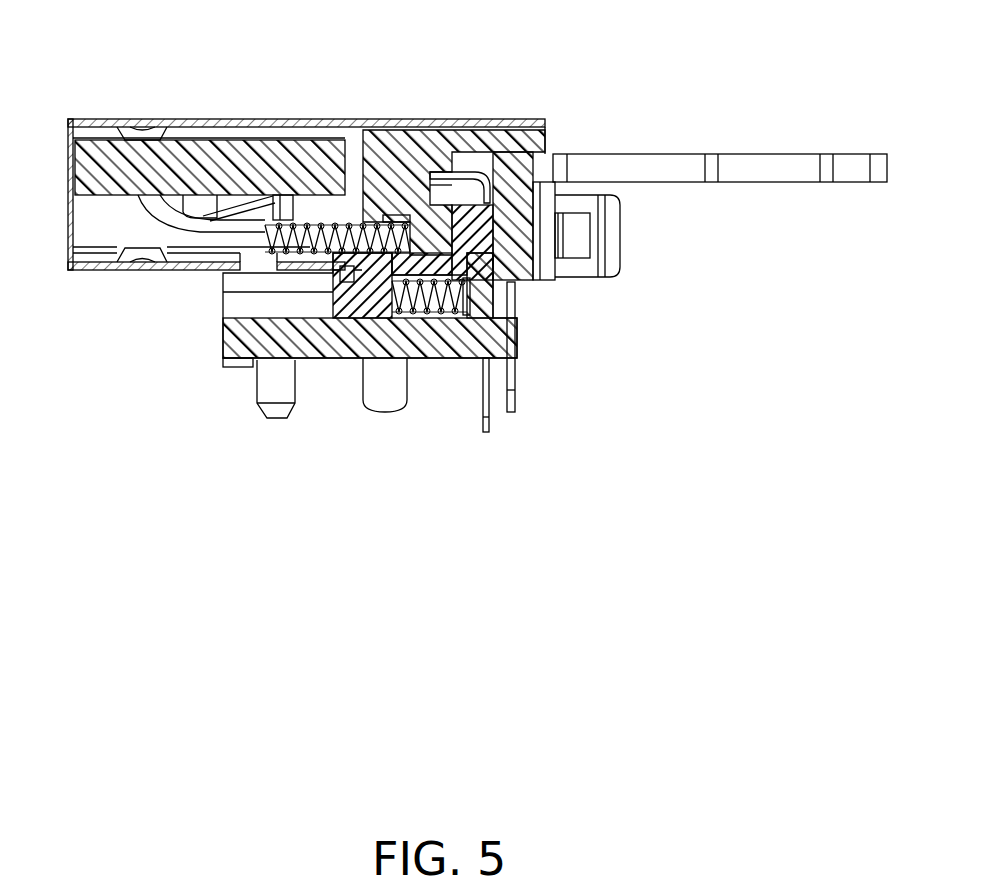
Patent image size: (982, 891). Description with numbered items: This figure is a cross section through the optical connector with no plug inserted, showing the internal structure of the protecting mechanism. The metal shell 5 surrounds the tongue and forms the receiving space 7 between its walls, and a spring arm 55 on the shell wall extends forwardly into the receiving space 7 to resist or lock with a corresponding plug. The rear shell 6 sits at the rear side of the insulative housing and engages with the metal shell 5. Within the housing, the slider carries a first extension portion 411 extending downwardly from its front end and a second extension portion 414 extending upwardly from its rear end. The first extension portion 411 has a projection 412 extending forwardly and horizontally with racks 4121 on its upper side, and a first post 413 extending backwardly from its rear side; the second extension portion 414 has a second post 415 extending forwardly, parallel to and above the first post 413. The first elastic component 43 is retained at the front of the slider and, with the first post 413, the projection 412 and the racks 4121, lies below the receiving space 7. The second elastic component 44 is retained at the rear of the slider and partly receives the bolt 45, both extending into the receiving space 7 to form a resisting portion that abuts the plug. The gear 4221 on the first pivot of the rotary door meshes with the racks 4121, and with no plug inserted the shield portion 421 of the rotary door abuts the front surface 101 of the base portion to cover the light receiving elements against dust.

The metal shell 5 is at (200, 125).
The spring arm 55 is at (158, 128).
The receiving space 7 is at (103, 215).
The bolt 45 is at (247, 245).
The second elastic component 44 is at (315, 215).
The front surface 101 is at (365, 222).
The shield portion 421 is at (400, 228).
The second post 415 is at (458, 176).
The second extension portion 414 is at (500, 205).
The rear shell 6 is at (515, 322).
The first extension portion 411 is at (410, 357).
The racks 4121 is at (345, 355).
The projection 412 is at (383, 363).
The gear 4221 is at (347, 278).
The first post 413 is at (455, 358).
The first elastic component 43 is at (510, 367).